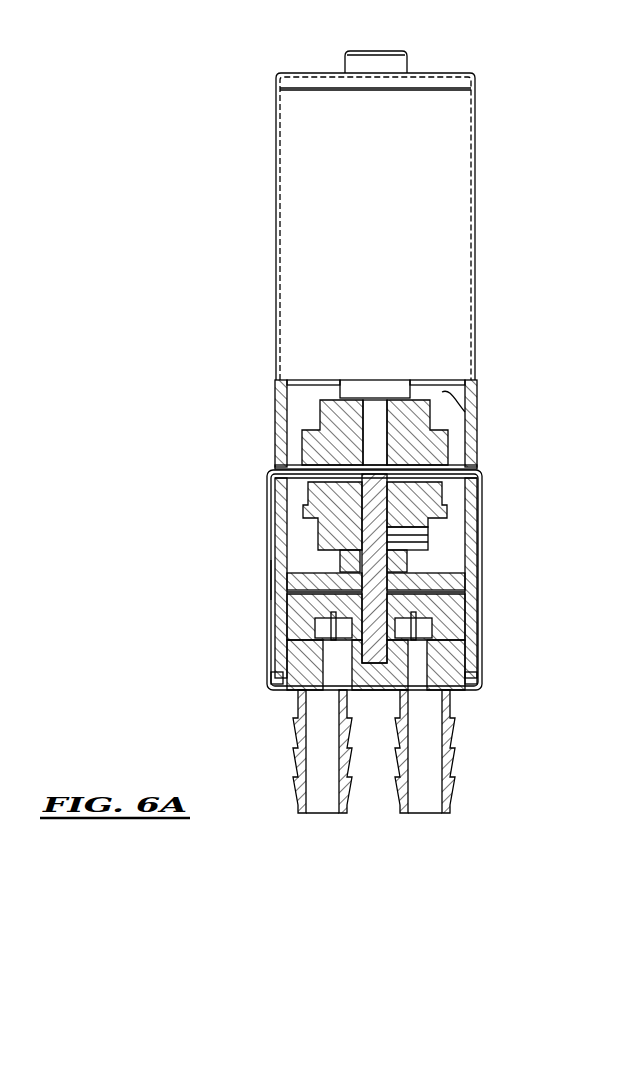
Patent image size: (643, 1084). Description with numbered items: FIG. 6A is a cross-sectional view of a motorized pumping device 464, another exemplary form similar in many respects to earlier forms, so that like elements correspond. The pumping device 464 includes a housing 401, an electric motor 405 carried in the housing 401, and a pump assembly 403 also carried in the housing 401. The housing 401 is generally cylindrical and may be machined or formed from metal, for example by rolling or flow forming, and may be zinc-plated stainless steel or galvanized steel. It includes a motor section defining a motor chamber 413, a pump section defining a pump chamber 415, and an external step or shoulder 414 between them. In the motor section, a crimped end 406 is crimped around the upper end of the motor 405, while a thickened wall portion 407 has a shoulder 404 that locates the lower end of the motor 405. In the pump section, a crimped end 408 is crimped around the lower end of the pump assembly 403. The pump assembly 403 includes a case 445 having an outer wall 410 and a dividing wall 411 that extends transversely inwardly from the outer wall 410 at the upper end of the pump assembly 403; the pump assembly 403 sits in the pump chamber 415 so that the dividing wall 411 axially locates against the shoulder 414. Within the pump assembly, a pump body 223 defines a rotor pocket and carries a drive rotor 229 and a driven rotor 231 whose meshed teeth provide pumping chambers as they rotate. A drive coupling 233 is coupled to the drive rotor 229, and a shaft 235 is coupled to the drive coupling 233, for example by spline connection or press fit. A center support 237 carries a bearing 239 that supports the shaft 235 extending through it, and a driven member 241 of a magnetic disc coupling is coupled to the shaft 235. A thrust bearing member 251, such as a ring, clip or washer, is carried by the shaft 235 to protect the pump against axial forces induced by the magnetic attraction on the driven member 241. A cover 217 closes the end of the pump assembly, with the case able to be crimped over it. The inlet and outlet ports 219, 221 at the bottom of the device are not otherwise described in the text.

The motorized pumping device 464 is at (213, 130).
The electric motor 405 is at (428, 190).
The crimped end 406 is at (477, 80).
The shoulder 404 is at (285, 372).
The thickened wall portion 407 is at (285, 415).
The motor chamber 413 is at (470, 422).
The housing 401 is at (257, 468).
The dividing wall 411 is at (300, 482).
The external step or shoulder 414 is at (478, 469).
The outer wall 410 is at (278, 553).
The pump chamber 415 is at (462, 532).
The case 445 is at (268, 580).
The center support 237 is at (293, 562).
The driven member 241 is at (425, 505).
The shaft 235 is at (385, 540).
The bearing 239 is at (392, 560).
The drive rotor 229 is at (430, 618).
The thrust bearing member 251 is at (278, 598).
The pump body 223 is at (283, 630).
The driven rotor 231 is at (418, 630).
The cover 217 is at (445, 685).
The drive coupling 233 is at (357, 658).
The crimped end 408 is at (478, 682).
The pump assembly 403 is at (270, 716).
The inlet port 219 is at (325, 790).
The outlet port 221 is at (428, 775).